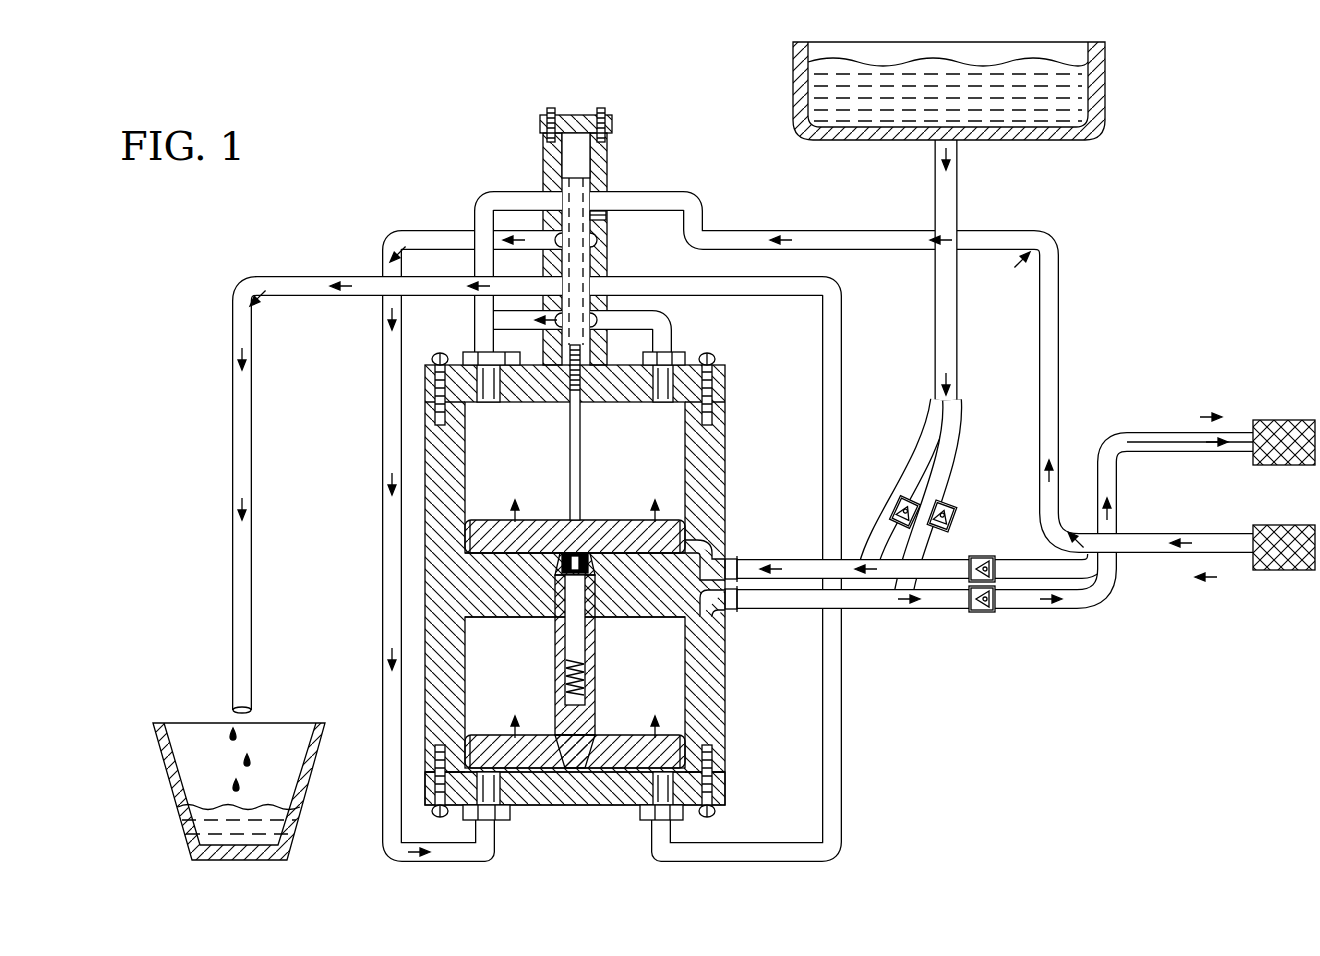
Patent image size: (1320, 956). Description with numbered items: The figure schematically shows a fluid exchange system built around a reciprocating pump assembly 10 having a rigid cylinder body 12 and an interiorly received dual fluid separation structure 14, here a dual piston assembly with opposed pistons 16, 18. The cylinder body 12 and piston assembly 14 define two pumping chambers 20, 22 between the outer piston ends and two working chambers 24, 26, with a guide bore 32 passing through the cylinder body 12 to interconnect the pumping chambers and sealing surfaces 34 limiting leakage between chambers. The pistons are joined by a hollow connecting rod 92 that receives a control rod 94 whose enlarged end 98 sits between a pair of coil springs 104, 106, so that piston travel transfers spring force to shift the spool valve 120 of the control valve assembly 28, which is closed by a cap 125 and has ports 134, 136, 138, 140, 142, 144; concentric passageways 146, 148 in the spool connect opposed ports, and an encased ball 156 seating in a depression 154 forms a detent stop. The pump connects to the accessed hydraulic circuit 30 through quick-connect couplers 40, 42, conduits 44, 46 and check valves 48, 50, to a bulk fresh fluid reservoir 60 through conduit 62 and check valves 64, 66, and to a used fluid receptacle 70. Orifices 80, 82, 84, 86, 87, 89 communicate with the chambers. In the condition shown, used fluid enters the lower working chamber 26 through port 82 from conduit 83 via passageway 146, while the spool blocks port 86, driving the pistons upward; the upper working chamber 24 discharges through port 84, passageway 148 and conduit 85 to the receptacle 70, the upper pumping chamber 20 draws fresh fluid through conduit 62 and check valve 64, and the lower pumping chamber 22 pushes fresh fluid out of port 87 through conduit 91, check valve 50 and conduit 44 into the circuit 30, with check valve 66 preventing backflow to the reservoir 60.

The reciprocating pump assembly 10 is at (750, 391).
The cylinder body 12 is at (725, 450).
The dual fluid separation structure 14 is at (690, 732).
The piston 16 is at (722, 760).
The piston 18 is at (718, 465).
The upper pumping chamber 20 is at (710, 548).
The lower pumping chamber 22 is at (665, 675).
The upper working chamber 24 is at (465, 458).
The lower working chamber 26 is at (727, 770).
The control valve assembly 28 is at (648, 133).
The accessed hydraulic circuit 30 is at (1274, 352).
The guide bore 32 is at (692, 628).
The chamber sealing surfaces 34 is at (700, 525).
The quick-connect fluid coupler 40 is at (1284, 420).
The quick-connect fluid coupler 42 is at (1288, 571).
The fluid conduit 44 is at (1120, 433).
The fluid conduit 46 is at (1150, 535).
The unidirectional check valve 48 is at (990, 556).
The unidirectional check valve 50 is at (985, 613).
The bulk fluid reservoir 60 is at (1100, 105).
The fluid conduit 62 is at (958, 180).
The unidirectional check valve 64 is at (895, 503).
The unidirectional check valve 66 is at (952, 510).
The used fluid receptacle 70 is at (298, 800).
The port 80 is at (505, 372).
The port 82 is at (505, 822).
The conduit 83 is at (500, 855).
The port 84 is at (690, 345).
The conduit 85 is at (305, 278).
The port 86 is at (690, 822).
The port 87 is at (744, 610).
The orifice 89 is at (740, 566).
The conduit 91 is at (890, 612).
The connecting rod 92 is at (597, 715).
The control rod 94 is at (569, 468).
The enlarged end 98 is at (560, 625).
The coil spring 104 is at (585, 512).
The coil spring 106 is at (595, 672).
The spool valve 120 is at (606, 180).
The cap 125 is at (606, 118).
The port 134 is at (610, 290).
The port 136 is at (628, 398).
The port 138 is at (548, 190).
The port 140 is at (495, 215).
The port 142 is at (505, 262).
The port 144 is at (490, 318).
The fluid passageway 146 is at (696, 214).
The fluid passageway 148 is at (645, 312).
The semi-spherical depression 154 is at (712, 250).
The encased ball 156 is at (606, 215).